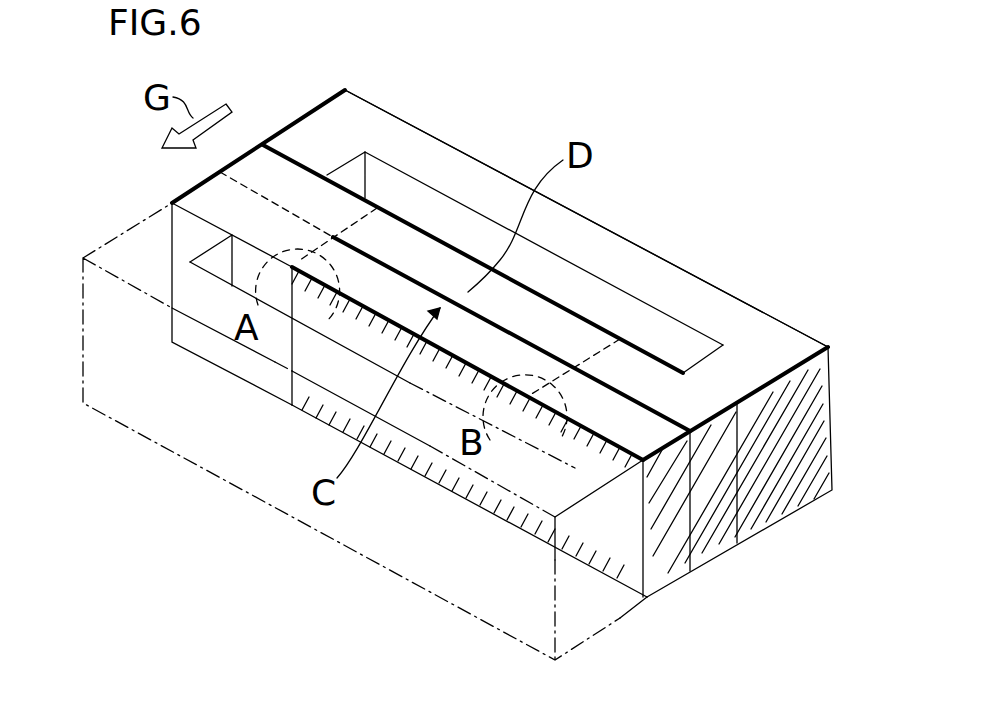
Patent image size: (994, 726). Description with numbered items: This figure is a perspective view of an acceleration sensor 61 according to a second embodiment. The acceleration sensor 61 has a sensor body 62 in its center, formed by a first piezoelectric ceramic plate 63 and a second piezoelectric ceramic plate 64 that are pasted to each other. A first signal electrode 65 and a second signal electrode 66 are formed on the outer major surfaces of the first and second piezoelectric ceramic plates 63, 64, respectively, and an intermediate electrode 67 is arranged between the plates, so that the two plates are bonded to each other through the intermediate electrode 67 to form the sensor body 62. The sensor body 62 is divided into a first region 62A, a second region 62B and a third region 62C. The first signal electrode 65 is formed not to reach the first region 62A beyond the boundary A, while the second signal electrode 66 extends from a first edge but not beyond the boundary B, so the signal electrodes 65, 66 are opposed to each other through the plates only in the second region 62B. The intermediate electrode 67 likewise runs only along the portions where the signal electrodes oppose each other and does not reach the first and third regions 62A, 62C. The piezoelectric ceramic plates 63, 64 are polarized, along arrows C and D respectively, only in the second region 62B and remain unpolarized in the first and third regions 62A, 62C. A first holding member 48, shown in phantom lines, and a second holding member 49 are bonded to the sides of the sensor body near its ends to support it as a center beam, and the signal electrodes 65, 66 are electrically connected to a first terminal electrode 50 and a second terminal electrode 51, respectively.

The first holding member 48 is at (88, 322).
The second holding member 49 is at (752, 306).
The first terminal electrode 50 is at (793, 465).
The second terminal electrode 51 is at (287, 128).
The acceleration sensor 61 is at (322, 87).
The sensor body 62 is at (663, 334).
The first region 62A is at (290, 190).
The second region 62B is at (463, 295).
The third region 62C is at (628, 292).
The first piezoelectric ceramic plate 63 is at (270, 220).
The second piezoelectric ceramic plate 64 is at (430, 264).
The first signal electrode 65 is at (381, 458).
The second signal electrode 66 is at (558, 298).
The intermediate electrode 67 is at (583, 397).